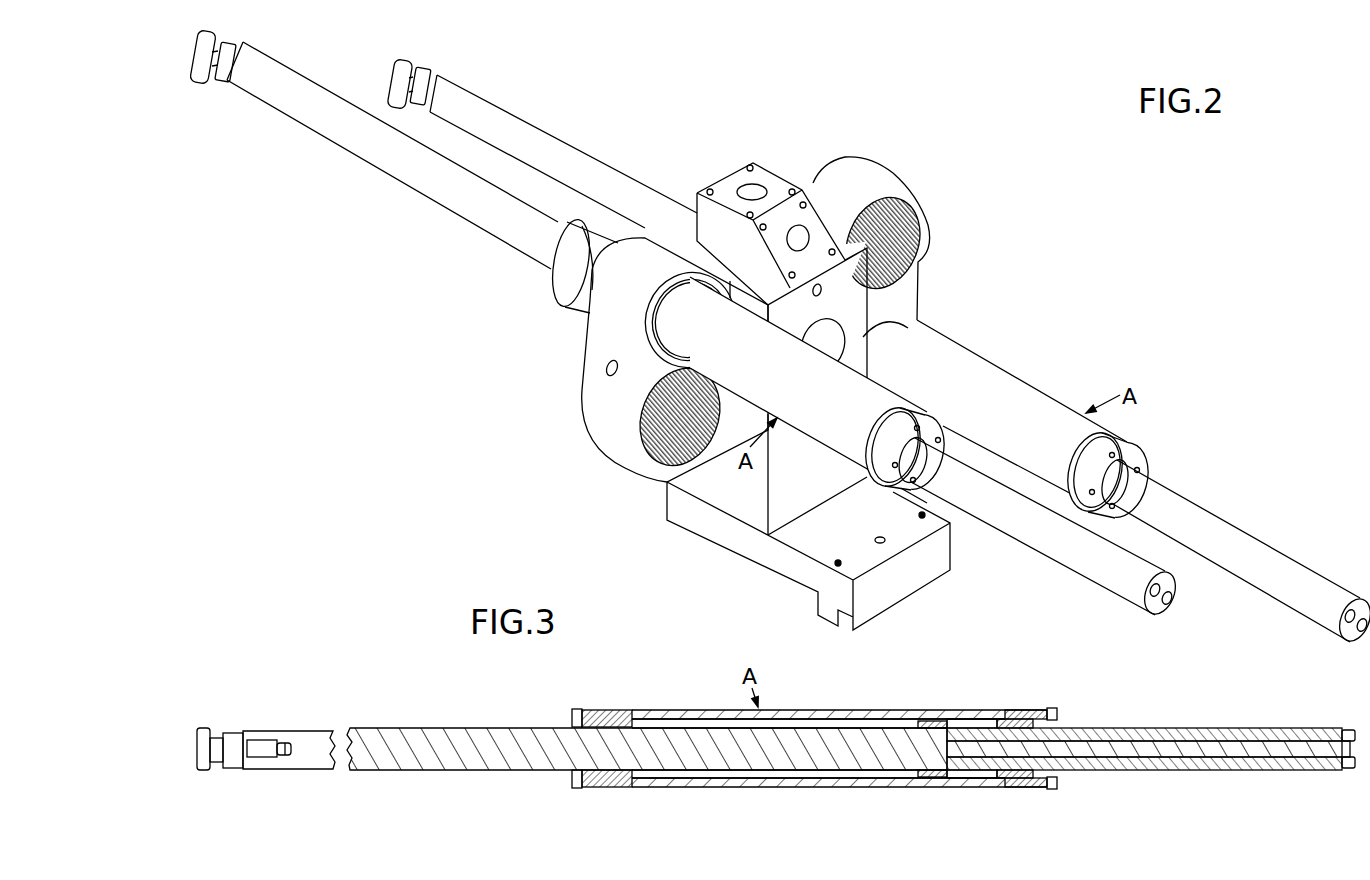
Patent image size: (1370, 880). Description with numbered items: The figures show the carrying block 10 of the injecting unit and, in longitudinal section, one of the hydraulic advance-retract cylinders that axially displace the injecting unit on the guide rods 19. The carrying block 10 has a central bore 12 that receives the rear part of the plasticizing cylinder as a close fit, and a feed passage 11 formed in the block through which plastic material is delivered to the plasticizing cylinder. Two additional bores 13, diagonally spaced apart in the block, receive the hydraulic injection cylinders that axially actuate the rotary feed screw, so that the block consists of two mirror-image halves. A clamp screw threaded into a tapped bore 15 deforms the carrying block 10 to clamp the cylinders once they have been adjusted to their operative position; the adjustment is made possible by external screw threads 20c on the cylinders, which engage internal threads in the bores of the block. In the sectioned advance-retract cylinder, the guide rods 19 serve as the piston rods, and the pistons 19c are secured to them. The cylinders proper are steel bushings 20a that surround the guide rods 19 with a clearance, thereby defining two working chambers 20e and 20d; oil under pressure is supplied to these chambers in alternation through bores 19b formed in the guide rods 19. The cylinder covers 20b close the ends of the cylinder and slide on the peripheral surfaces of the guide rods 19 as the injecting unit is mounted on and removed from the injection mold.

In FIG. 2, the carrying block 10 is at (720, 170).
In FIG. 2, the feed passage 11 is at (798, 238).
In FIG. 2, the central bore 12 is at (875, 327).
In FIG. 2, the additional bores 13 is at (920, 220).
In FIG. 2, the tapped bore 15 is at (613, 361).
In FIG. 2, the guide rods 19 is at (432, 177).
In FIG. 3, the guide rods 19 is at (442, 725).
In FIG. 2, the bores in the guide rods 19b is at (1173, 600).
In FIG. 3, the bores in the guide rods 19b is at (1203, 758).
In FIG. 3, the pistons 19c is at (943, 721).
In FIG. 2, the steel bushings 20a is at (770, 370).
In FIG. 3, the steel bushings 20a is at (870, 710).
In FIG. 2, the cylinder covers 20b is at (565, 255).
In FIG. 3, the cylinder covers 20b is at (582, 710).
In FIG. 2, the external screw threads 20c is at (665, 312).
In FIG. 3, the external screw threads 20c is at (683, 710).
In FIG. 3, the working chamber 20d is at (978, 722).
In FIG. 3, the working chamber 20e is at (795, 723).